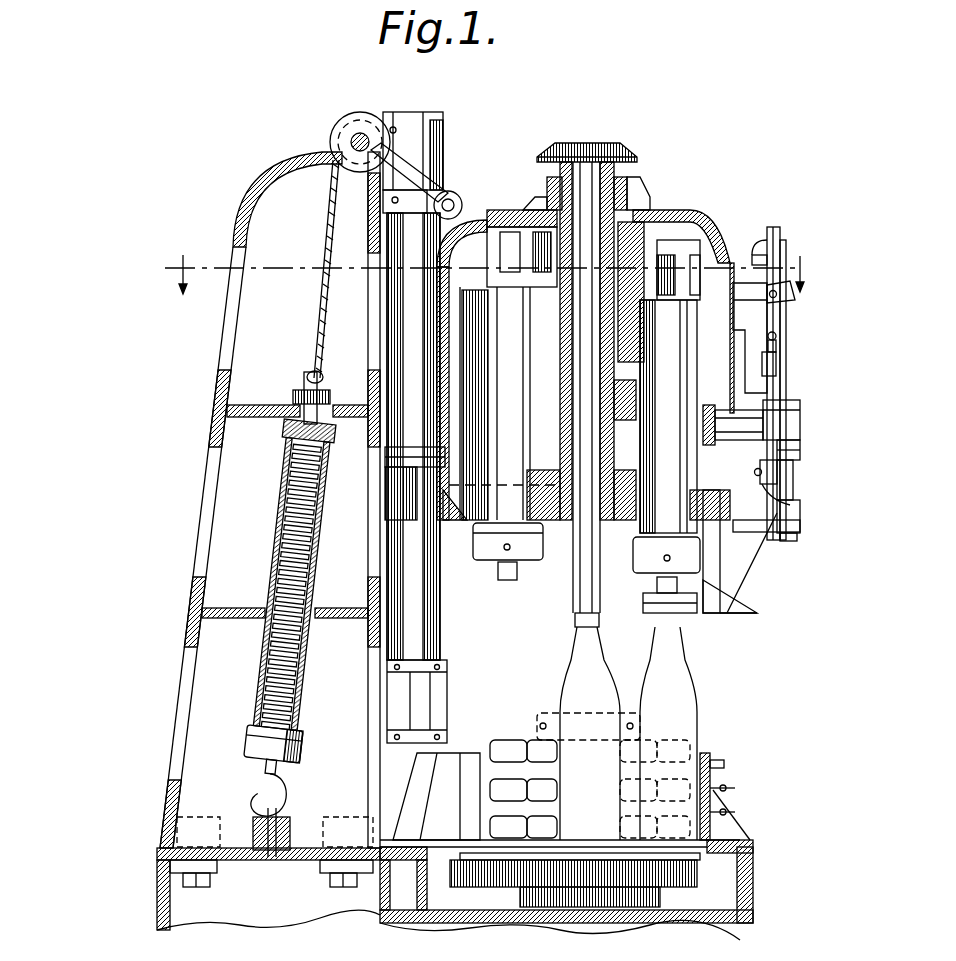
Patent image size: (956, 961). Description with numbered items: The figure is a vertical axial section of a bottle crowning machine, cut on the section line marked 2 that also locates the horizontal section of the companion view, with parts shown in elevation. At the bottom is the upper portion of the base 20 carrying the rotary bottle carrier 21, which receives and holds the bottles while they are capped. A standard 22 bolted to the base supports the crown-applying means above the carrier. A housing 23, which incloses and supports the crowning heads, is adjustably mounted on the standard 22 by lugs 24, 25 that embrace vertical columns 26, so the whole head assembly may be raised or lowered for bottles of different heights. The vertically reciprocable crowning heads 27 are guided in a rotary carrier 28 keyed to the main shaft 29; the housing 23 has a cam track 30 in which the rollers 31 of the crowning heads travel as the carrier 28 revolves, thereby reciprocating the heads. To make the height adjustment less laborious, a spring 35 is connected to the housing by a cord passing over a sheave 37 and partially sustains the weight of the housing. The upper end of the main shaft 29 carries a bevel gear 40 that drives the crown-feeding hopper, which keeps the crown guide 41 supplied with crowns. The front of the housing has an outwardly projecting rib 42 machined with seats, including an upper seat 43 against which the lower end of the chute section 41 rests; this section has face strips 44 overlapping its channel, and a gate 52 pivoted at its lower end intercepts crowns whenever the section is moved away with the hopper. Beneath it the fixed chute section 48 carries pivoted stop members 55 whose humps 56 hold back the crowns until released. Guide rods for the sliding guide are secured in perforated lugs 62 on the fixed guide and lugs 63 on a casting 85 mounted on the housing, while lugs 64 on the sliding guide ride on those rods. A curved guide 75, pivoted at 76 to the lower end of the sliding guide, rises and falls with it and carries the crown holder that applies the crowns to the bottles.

The base 20 is at (753, 877).
The rotary bottle carrier 21 is at (590, 850).
The standard 22 is at (167, 813).
The housing 23 is at (457, 510).
The lug 24 is at (388, 507).
The lug 25 is at (400, 224).
The vertical column 26 is at (432, 612).
The crowning head 27 is at (407, 457).
The rotary carrier 28 is at (562, 520).
The main shaft 29 is at (577, 597).
The cam track 30 is at (653, 230).
The roller 31 is at (517, 243).
The spring 35 is at (282, 497).
The sheave 37 is at (357, 113).
The bevel gear 40 is at (618, 148).
The crown guide 41 is at (772, 230).
The rib 42 is at (750, 302).
The upper seat 43 is at (758, 247).
The face strips 44 is at (783, 252).
The fixed chute section 48 is at (777, 338).
The gate 52 is at (793, 293).
The stop member 55 is at (497, 883).
The hump 56 is at (313, 310).
The perforated lug 62 is at (800, 417).
The perforated lug 63 is at (793, 513).
The lug 64 is at (800, 442).
The curved guide 75 is at (780, 493).
The pivot 76 is at (793, 471).
The casting 85 is at (757, 530).
The section line 2 is at (483, 274).